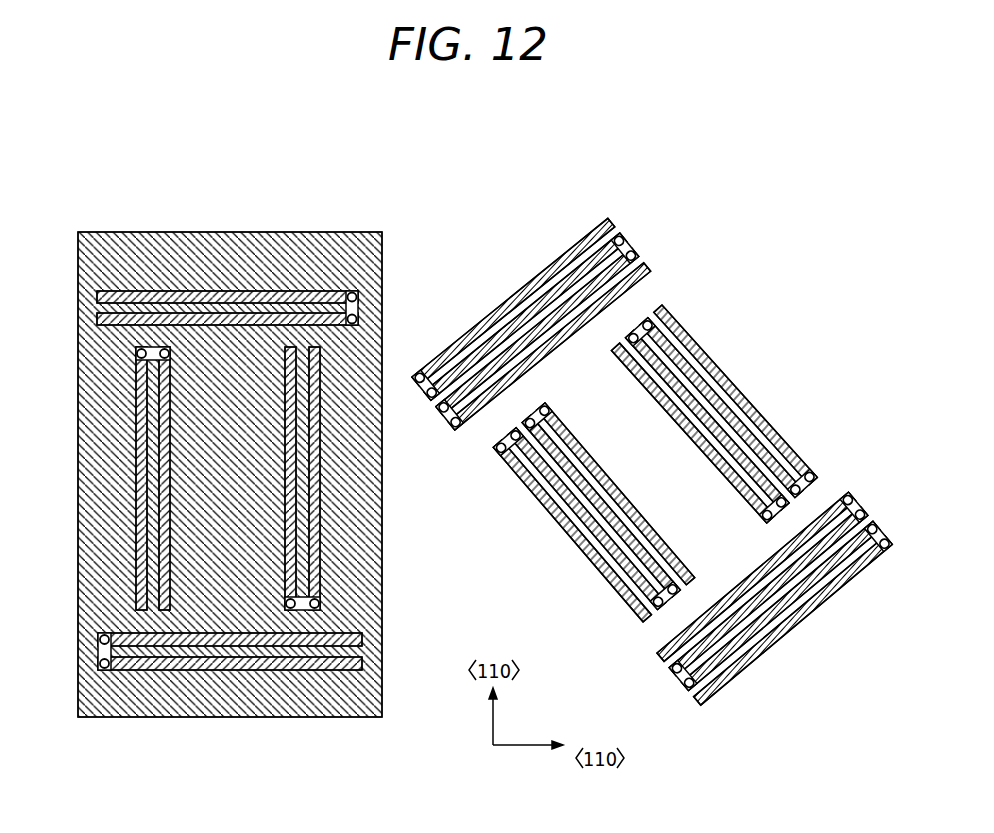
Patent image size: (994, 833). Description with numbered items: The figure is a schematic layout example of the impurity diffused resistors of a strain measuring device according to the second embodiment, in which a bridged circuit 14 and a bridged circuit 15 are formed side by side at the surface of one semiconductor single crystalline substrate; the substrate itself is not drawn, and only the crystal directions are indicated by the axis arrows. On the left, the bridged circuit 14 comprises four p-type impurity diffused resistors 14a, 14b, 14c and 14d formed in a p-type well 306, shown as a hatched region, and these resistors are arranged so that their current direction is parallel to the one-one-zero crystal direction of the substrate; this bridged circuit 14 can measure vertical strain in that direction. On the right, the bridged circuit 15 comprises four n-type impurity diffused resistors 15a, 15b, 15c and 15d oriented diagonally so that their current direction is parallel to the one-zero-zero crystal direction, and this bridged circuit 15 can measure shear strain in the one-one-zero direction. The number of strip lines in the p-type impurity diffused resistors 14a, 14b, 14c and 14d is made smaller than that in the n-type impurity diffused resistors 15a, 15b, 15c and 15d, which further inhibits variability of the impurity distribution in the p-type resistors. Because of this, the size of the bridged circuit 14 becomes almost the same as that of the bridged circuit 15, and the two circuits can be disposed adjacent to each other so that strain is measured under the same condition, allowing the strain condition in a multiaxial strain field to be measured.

The bridged circuit 14 is at (78, 153).
The p-type impurity diffused resistor 14a is at (198, 291).
The p-type impurity diffused resistor 14b is at (318, 356).
The p-type impurity diffused resistor 14c is at (190, 670).
The p-type impurity diffused resistor 14d is at (134, 380).
The p-type well 306 is at (320, 250).
The bridged circuit 15 is at (415, 153).
The n-type impurity diffused resistor 15a is at (552, 272).
The n-type impurity diffused resistor 15b is at (712, 348).
The n-type impurity diffused resistor 15c is at (768, 658).
The n-type impurity diffused resistor 15d is at (558, 523).